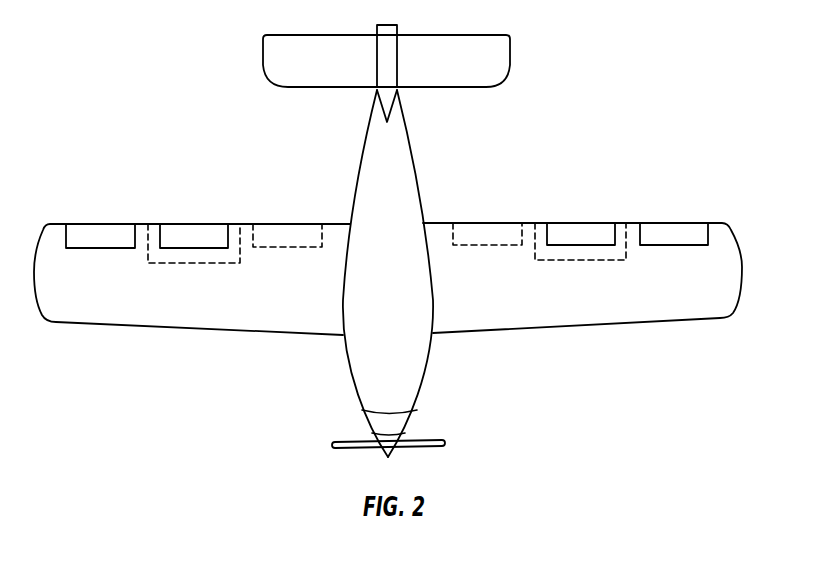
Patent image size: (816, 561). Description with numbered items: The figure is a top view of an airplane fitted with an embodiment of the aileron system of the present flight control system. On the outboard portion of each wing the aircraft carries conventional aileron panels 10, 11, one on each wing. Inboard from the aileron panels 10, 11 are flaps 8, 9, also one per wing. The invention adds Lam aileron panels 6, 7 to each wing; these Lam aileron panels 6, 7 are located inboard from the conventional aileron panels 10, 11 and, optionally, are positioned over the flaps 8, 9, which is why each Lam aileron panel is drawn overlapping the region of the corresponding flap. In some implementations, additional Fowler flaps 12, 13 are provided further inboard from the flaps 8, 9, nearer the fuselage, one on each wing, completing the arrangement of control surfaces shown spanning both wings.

The Lam aileron panel 6 is at (577, 232).
The Lam aileron panel 7 is at (195, 235).
The flap 8 is at (618, 222).
The flap 9 is at (233, 223).
The aileron panel 10 is at (673, 222).
The aileron panel 11 is at (105, 224).
The Fowler flap 12 is at (485, 223).
The Fowler flap 13 is at (287, 223).